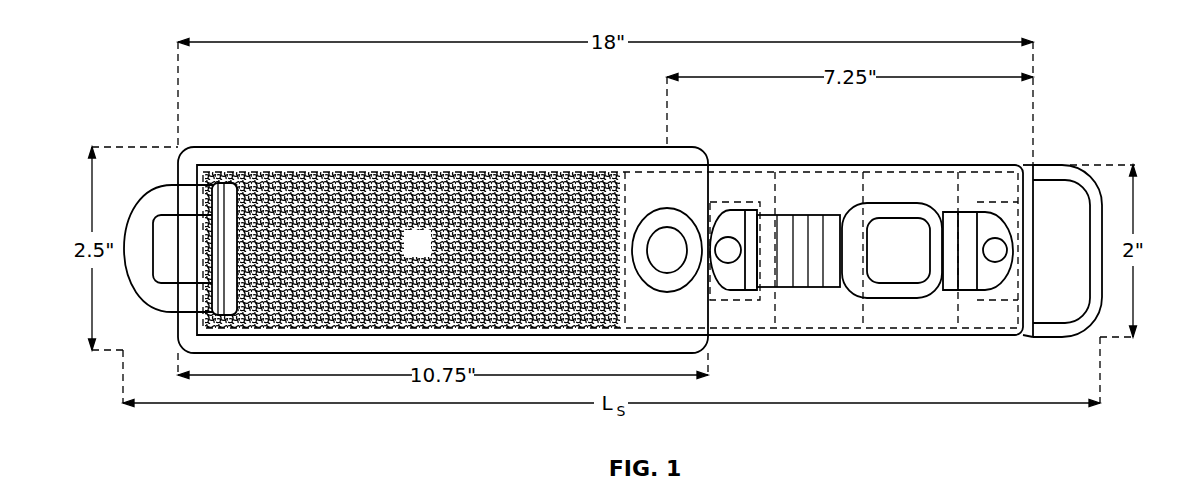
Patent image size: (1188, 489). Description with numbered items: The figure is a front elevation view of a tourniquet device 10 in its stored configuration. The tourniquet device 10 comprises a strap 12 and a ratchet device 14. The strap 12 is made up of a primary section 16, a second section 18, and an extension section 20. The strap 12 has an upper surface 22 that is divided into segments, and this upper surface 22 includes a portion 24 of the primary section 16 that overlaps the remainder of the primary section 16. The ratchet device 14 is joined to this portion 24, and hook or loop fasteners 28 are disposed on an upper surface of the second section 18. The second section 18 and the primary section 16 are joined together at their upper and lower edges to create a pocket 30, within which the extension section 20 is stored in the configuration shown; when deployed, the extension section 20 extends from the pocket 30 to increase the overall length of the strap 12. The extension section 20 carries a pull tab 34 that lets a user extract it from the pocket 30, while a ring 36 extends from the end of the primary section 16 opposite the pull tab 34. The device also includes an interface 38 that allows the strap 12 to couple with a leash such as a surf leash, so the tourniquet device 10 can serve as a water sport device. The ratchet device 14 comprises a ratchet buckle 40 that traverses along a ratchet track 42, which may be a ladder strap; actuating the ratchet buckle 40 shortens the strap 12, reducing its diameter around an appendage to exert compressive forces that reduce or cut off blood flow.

The tourniquet device 10 is at (147, 34).
The strap 12 is at (355, 125).
The ratchet device 14 is at (940, 175).
The primary section 16 is at (445, 147).
The second section 18 is at (568, 166).
The extension section 20 is at (247, 163).
The upper surface 22 is at (731, 138).
The portion of the primary section 24 is at (739, 200).
The hook or loop fasteners 28 is at (429, 254).
The pocket 30 is at (211, 316).
The pull tab 34 is at (157, 190).
The ring 36 is at (1050, 165).
The interface 38 is at (670, 207).
The ratchet buckle 40 is at (893, 203).
The ratchet track 42 is at (772, 217).